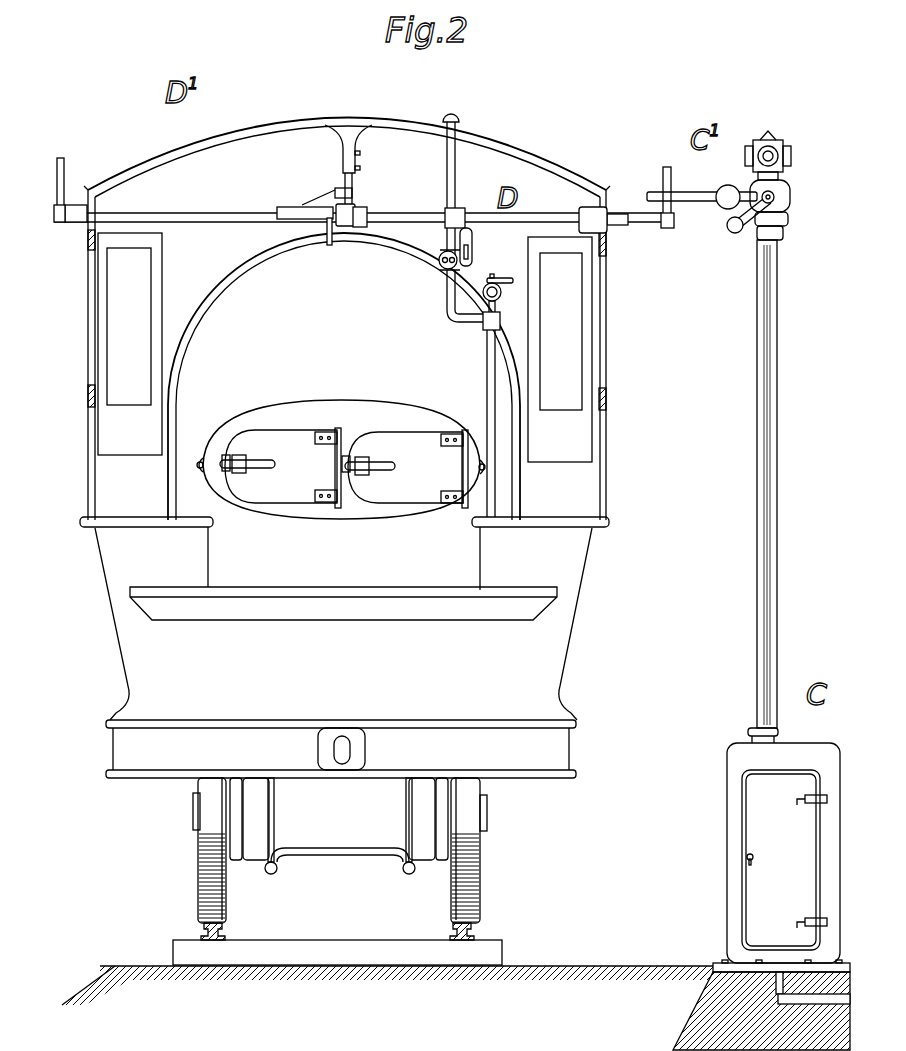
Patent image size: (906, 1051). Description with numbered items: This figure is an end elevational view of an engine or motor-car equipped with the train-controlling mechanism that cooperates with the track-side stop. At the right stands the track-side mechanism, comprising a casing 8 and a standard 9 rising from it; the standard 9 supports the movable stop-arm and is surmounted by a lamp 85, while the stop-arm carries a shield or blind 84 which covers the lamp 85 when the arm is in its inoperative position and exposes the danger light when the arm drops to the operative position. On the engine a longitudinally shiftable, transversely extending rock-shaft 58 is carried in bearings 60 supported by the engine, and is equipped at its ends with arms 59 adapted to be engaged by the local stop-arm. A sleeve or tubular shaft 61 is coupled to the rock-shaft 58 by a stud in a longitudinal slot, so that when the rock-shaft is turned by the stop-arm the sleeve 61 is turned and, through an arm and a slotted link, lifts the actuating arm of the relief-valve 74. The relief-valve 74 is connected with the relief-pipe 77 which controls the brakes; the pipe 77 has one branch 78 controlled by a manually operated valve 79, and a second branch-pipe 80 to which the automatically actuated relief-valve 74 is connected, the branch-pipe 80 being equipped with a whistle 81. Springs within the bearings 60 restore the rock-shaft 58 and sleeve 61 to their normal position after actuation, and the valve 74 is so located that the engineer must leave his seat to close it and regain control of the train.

The casing 8 is at (766, 857).
The standard 9 is at (758, 577).
The rock-shaft 58 is at (206, 211).
The arms 59 is at (62, 160).
The bearings 60 is at (79, 223).
The sleeve 61 is at (476, 212).
The relief-valve 74 is at (440, 264).
The relief-pipe 77 is at (487, 379).
The branch 78 is at (500, 318).
The manually operated valve 79 is at (493, 283).
The branch-pipe 80 is at (447, 180).
The whistle 81 is at (460, 116).
The shield 84 is at (733, 192).
The lamp 85 is at (784, 150).